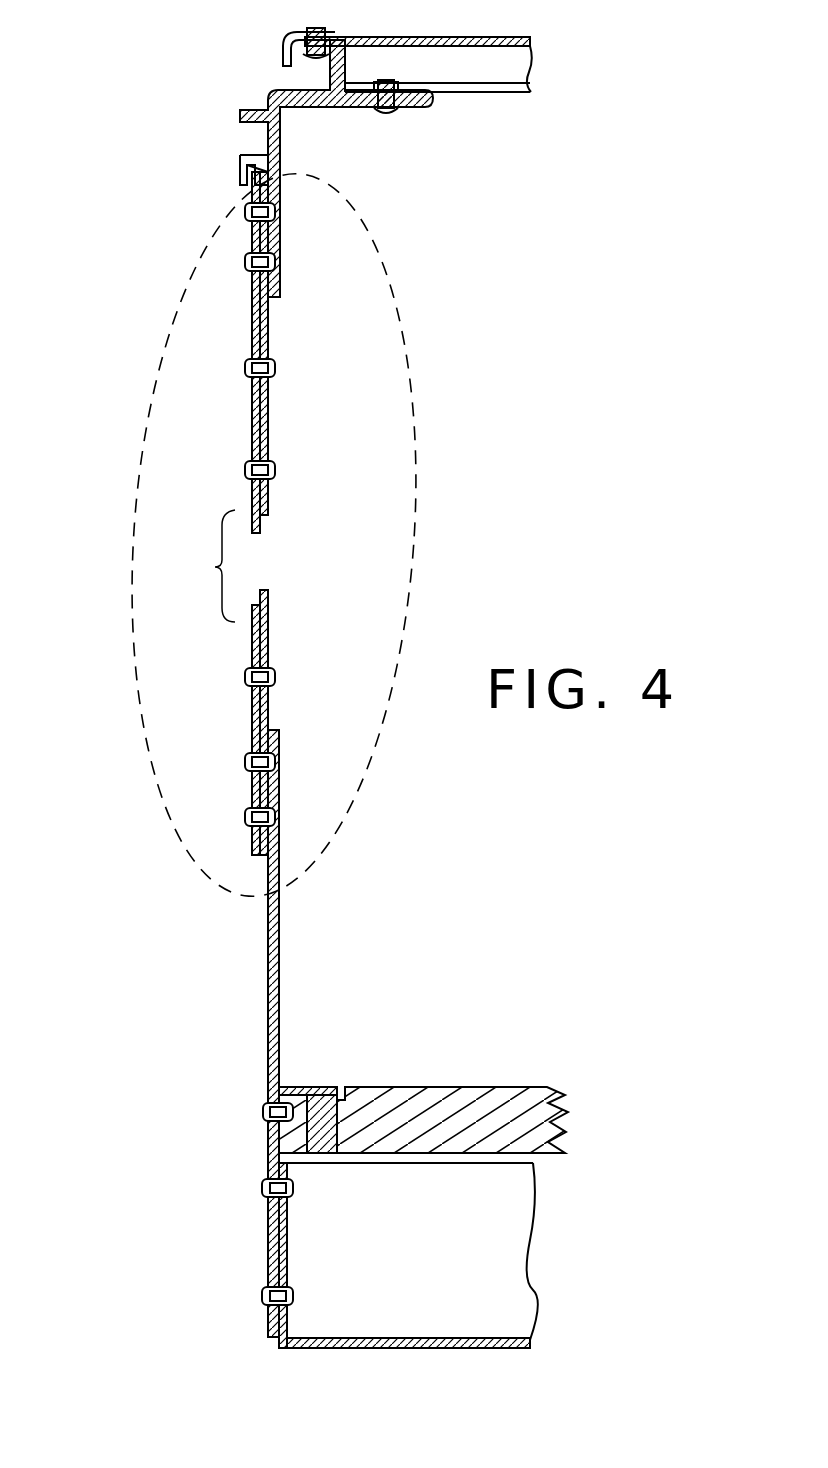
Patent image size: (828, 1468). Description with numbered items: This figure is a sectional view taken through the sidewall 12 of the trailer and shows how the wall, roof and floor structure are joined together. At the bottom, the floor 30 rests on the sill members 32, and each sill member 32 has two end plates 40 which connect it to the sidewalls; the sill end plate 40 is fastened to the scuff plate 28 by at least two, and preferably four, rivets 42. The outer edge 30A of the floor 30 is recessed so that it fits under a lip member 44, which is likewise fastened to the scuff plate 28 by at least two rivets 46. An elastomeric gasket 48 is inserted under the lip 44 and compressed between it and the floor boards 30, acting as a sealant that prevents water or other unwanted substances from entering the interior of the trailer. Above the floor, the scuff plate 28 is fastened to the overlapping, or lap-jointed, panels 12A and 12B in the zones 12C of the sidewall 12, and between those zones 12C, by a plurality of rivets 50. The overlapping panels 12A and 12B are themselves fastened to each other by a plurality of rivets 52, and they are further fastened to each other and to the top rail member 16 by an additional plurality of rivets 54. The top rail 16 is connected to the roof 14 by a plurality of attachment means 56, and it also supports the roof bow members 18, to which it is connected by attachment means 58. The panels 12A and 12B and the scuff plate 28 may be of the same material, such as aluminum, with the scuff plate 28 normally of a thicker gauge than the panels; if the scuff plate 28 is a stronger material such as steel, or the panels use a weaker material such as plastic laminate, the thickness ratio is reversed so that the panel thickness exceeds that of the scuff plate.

The sidewall 12 is at (128, 410).
The overlapping panel 12A is at (252, 422).
The overlapping panel 12B is at (281, 326).
The zone 12C is at (418, 486).
The roof 14 is at (531, 45).
The top rail member 16 is at (273, 101).
The roof bow member 18 is at (486, 86).
The scuff plate 28 is at (281, 945).
The floor 30 is at (455, 1087).
The outer edge 30A is at (337, 1088).
The sill member 32 is at (500, 1172).
The end plate 40 is at (280, 1238).
The rivet 42 is at (264, 1190).
The lip member 44 is at (305, 1090).
The rivet 46 is at (266, 1112).
The elastomeric gasket 48 is at (326, 1140).
The rivet 50 is at (282, 762).
The rivet 52 is at (284, 368).
The rivet 54 is at (286, 212).
The attachment means 56 is at (312, 40).
The attachment means 58 is at (392, 110).